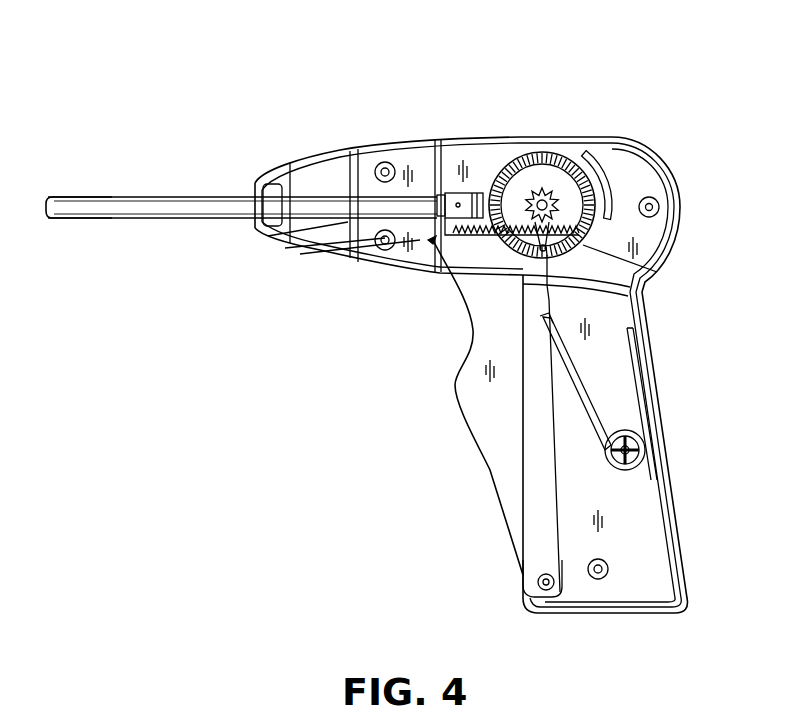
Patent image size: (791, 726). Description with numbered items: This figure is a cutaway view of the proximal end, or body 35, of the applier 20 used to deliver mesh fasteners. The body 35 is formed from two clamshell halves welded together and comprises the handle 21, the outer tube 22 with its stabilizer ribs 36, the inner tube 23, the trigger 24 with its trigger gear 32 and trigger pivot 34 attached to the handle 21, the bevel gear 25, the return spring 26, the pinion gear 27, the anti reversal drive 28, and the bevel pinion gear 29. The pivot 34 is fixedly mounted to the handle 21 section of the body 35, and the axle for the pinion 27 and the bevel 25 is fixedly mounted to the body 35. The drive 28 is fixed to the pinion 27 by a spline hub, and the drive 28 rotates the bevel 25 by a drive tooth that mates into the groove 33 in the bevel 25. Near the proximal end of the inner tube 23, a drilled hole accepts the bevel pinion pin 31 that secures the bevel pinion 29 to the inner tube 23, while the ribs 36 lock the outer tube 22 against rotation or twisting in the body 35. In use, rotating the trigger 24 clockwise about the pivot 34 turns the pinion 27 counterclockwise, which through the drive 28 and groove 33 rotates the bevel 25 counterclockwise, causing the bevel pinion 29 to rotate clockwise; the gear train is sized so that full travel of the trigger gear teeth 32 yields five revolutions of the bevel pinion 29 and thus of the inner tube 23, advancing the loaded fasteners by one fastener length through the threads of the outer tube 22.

The applier 20 is at (488, 70).
The handle 21 is at (652, 357).
The outer tube 22 is at (162, 197).
The inner tube 23 is at (112, 202).
The trigger 24 is at (468, 375).
The bevel gear 25 is at (603, 143).
The return spring 26 is at (587, 403).
The pinion gear 27 is at (540, 203).
The anti reversal drive 28 is at (658, 272).
The bevel pinion gear 29 is at (458, 203).
The bevel pinion pin 31 is at (438, 207).
The trigger gear 32 is at (444, 218).
The groove 33 is at (517, 237).
The trigger pivot 34 is at (537, 603).
The body 35 is at (558, 137).
The stabilizer ribs 36 is at (330, 258).